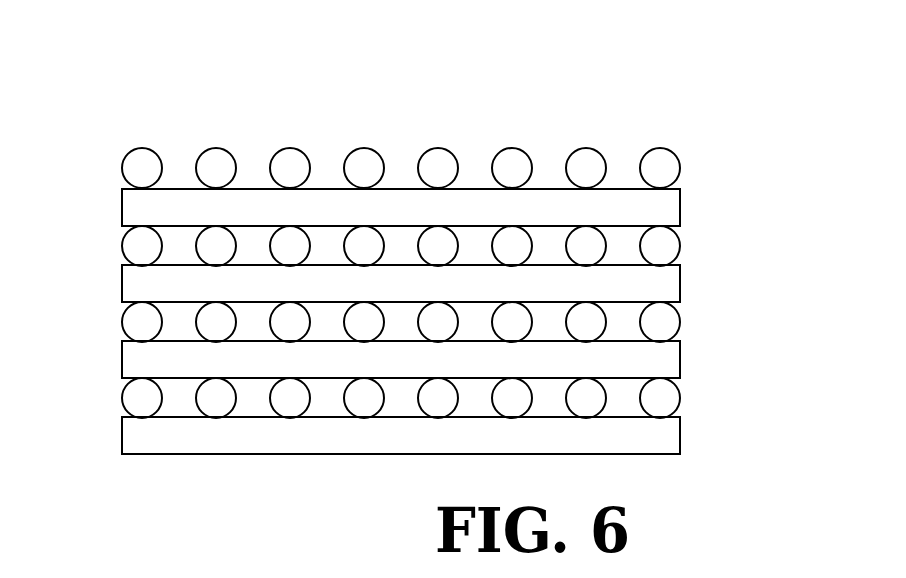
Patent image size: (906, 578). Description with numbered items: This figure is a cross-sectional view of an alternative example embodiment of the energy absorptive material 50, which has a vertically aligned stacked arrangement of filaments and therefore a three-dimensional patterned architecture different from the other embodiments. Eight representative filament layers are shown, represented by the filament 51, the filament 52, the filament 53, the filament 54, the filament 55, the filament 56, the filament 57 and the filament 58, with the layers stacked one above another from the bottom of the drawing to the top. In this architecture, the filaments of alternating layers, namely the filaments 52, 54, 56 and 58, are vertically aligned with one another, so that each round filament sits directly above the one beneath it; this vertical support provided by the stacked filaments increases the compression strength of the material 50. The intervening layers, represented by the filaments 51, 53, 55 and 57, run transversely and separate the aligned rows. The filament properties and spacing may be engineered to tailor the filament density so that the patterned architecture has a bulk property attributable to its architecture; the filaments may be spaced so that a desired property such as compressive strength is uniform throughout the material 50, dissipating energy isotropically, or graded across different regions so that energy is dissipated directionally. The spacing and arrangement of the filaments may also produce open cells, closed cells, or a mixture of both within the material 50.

The energy absorptive material 50 is at (605, 112).
The filament of layer one 51 is at (681, 437).
The filament of layer two 52 is at (121, 402).
The filament of layer three 53 is at (681, 360).
The filament of layer four 54 is at (121, 326).
The filament of layer five 55 is at (681, 283).
The filament of layer six 56 is at (121, 250).
The filament of layer seven 57 is at (681, 212).
The filament of layer eight 58 is at (121, 171).